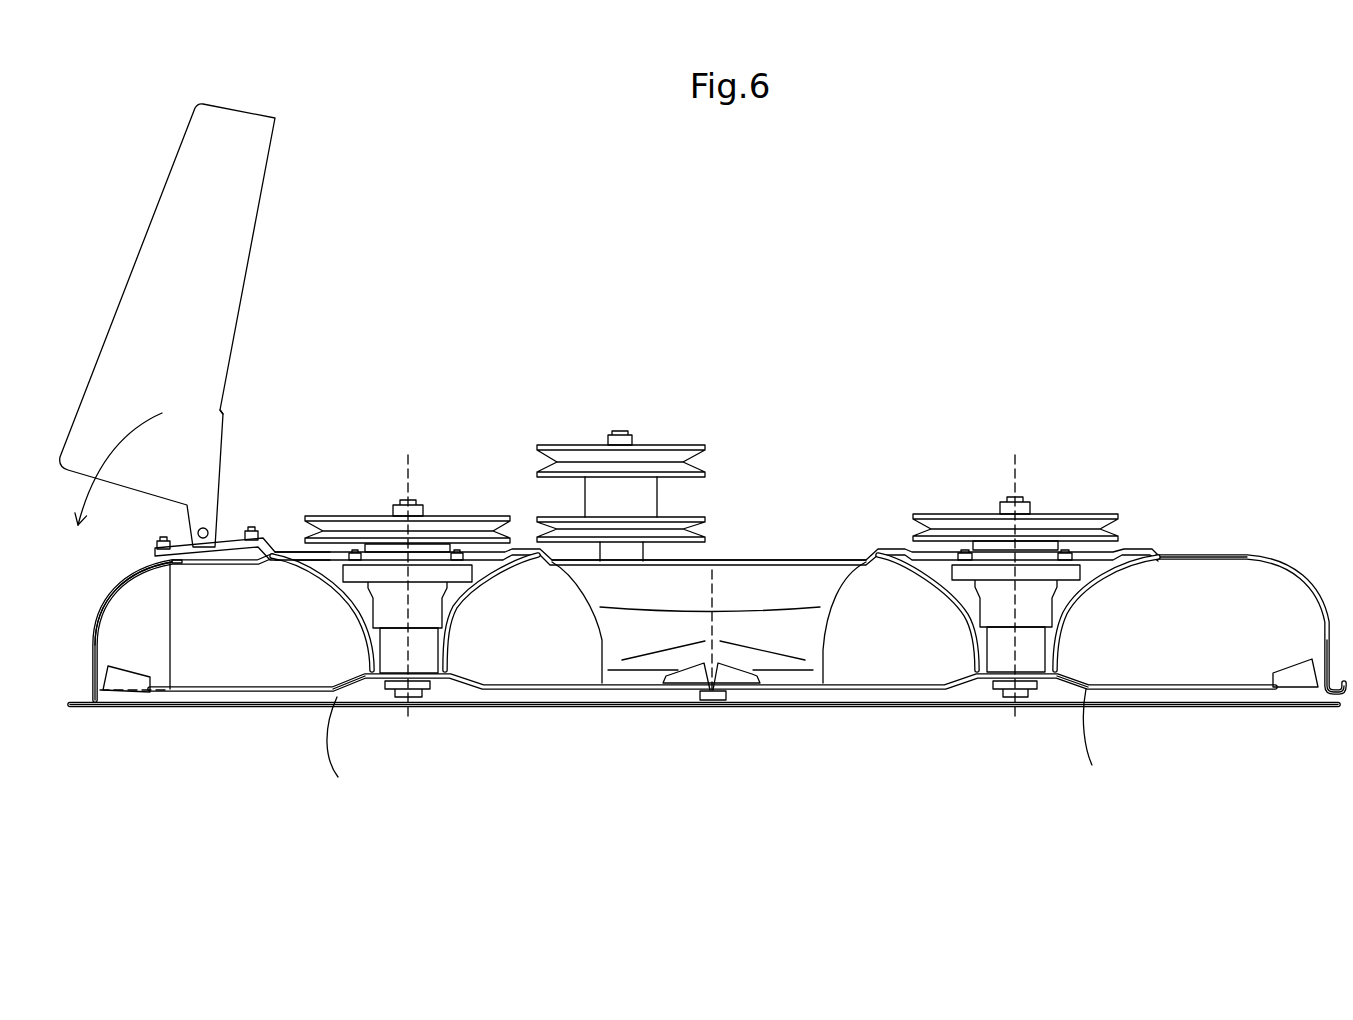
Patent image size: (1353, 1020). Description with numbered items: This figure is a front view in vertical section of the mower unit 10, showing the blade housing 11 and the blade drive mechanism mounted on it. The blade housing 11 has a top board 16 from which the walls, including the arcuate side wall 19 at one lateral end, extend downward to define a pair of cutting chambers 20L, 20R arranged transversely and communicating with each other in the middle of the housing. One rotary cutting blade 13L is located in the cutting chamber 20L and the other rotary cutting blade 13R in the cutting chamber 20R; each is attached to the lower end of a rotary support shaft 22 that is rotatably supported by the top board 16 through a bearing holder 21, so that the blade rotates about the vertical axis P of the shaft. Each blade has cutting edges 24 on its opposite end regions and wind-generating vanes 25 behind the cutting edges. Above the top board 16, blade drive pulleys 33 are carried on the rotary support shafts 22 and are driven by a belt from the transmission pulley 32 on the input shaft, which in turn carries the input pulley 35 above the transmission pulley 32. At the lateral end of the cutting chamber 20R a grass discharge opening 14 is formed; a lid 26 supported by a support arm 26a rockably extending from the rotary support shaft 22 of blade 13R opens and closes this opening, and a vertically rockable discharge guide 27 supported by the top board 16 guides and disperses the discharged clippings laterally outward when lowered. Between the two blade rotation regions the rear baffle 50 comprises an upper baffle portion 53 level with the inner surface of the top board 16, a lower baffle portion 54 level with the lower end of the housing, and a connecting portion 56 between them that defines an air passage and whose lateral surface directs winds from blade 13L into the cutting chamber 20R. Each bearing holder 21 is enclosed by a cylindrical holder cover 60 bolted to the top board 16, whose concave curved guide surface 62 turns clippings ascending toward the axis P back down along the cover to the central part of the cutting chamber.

The mower deck 10 is at (893, 415).
The blade housing 11 is at (1215, 555).
The rotary cutting blade 13R is at (338, 742).
The rotary cutting blade 13L is at (1085, 735).
The grass discharge opening 14 is at (142, 603).
The top board 16 is at (815, 556).
The side wall 19 is at (1330, 655).
The cutting chamber 20R is at (267, 638).
The cutting chamber 20L is at (1200, 648).
The bearing holder 21 is at (435, 595).
The rotary support shaft 22 is at (427, 655).
The cutting edges 24 is at (748, 703).
The wind-generating vanes 25 is at (132, 673).
The lid 26 is at (92, 640).
The support arm 26a is at (257, 542).
The discharge guide 27 is at (223, 243).
The transmission pulley 32 is at (677, 517).
The blade drive pulleys 33 is at (357, 520).
The input pulley 35 is at (663, 443).
The rear baffle 50 is at (597, 642).
The upper baffle portion 53 is at (768, 597).
The lower baffle portion 54 is at (637, 677).
The connecting portion 56 is at (783, 635).
The holder cover 60 is at (367, 658).
The curved guide surface 62 is at (330, 588).
The axis P is at (711, 575).